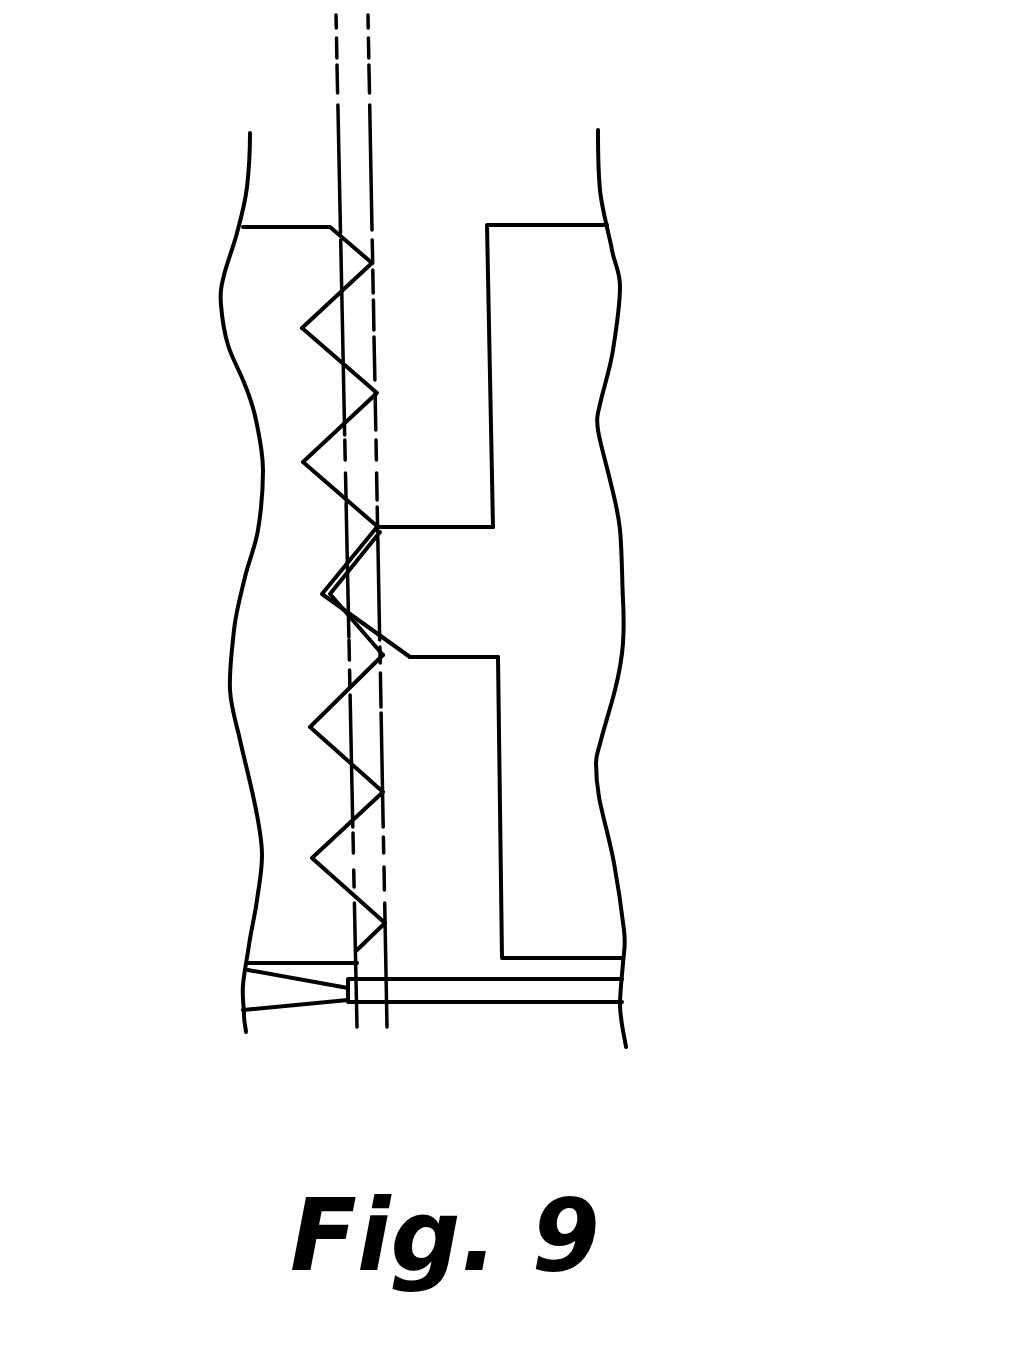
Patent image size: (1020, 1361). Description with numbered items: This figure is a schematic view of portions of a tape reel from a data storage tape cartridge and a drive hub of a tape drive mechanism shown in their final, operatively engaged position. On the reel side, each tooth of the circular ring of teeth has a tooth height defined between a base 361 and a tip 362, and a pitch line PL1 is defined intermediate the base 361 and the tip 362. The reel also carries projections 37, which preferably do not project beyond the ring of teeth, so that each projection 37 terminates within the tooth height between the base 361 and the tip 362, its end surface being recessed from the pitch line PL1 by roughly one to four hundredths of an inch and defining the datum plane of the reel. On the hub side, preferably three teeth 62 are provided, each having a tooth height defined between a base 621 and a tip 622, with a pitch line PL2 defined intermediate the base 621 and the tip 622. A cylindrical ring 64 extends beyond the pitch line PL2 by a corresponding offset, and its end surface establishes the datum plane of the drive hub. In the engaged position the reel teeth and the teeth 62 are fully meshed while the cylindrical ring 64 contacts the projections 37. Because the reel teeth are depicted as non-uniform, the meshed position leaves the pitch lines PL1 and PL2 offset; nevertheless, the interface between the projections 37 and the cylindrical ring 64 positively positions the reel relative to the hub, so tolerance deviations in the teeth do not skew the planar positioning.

The pitch line PL1 is at (337, 80).
The pitch line PL2 is at (370, 80).
The base 361 is at (302, 326).
The tip 362 is at (380, 395).
The teeth 62 is at (462, 555).
The base 621 is at (410, 657).
The tip 622 is at (318, 594).
The projections 37 is at (278, 997).
The cylindrical ring 64 is at (500, 993).